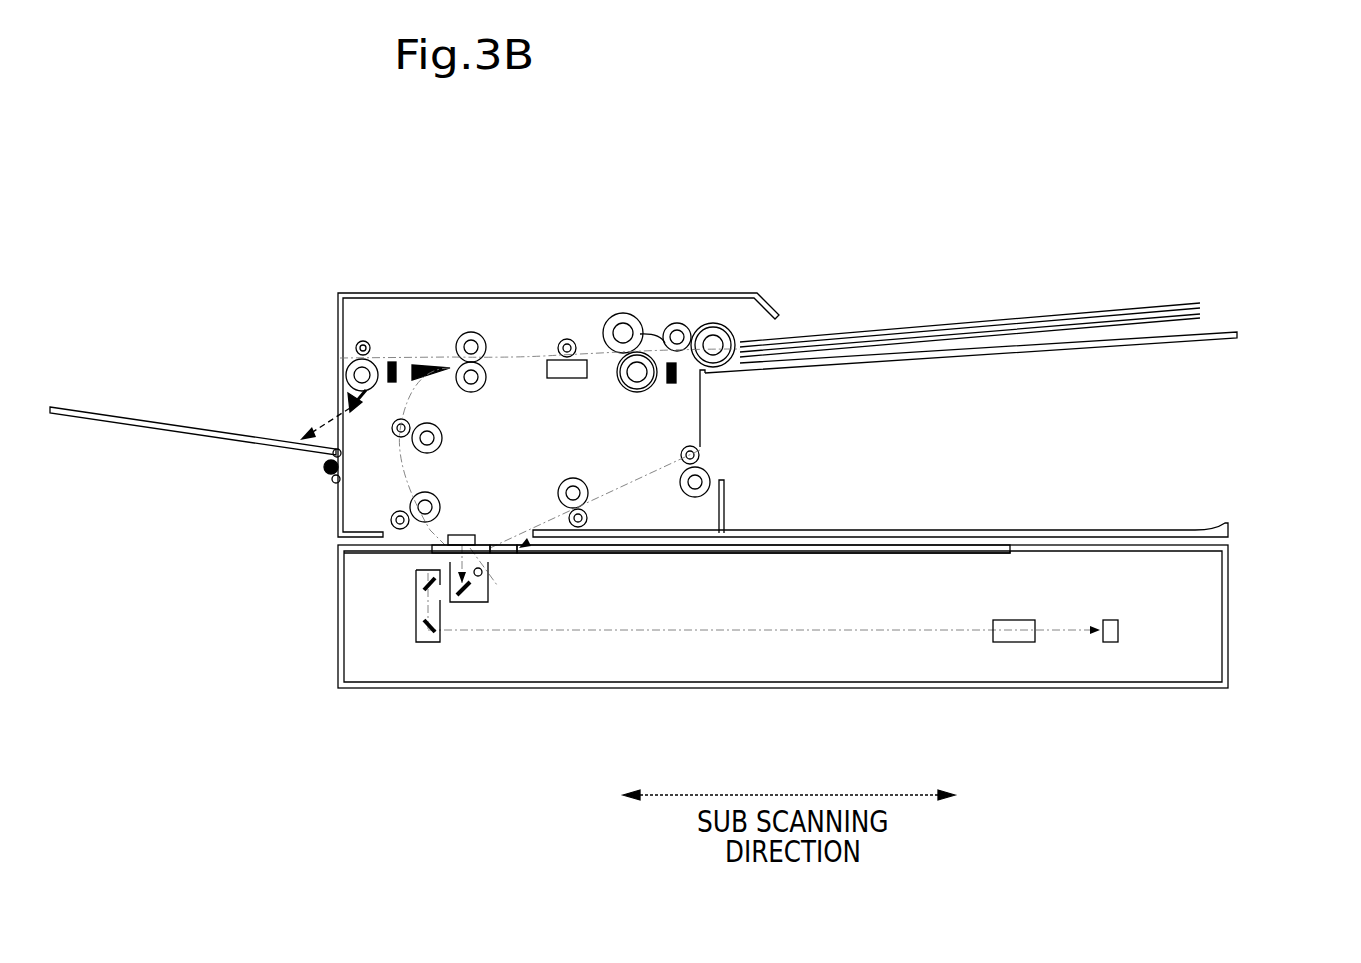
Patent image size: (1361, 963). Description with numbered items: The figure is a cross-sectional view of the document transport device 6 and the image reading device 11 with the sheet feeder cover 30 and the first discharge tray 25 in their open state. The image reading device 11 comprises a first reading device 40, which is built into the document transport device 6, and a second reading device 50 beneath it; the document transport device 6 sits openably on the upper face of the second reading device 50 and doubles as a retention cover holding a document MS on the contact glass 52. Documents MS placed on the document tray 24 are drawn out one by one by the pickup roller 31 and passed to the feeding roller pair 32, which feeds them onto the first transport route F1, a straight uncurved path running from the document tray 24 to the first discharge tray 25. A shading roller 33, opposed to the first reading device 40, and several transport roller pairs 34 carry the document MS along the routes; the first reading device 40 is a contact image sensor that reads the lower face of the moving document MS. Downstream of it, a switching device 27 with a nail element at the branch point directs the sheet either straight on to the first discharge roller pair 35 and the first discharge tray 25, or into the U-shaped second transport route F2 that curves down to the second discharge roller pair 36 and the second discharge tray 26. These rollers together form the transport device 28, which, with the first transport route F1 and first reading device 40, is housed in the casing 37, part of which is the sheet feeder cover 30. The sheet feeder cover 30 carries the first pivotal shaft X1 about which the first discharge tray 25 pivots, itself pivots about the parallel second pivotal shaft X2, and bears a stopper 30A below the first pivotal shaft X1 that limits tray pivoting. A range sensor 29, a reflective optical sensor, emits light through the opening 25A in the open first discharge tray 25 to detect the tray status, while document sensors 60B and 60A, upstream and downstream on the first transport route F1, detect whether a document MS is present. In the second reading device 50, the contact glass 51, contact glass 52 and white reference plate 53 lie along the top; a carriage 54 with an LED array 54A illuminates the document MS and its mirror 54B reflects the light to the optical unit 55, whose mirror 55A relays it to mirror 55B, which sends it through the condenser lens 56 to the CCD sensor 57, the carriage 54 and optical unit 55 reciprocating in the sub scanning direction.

The document transport device 6 is at (343, 270).
The image reading device 11 is at (1268, 620).
The document tray 24 is at (1245, 330).
The first discharge tray 25 is at (160, 430).
The opening 25A is at (300, 438).
The second discharge tray 26 is at (1130, 530).
The switching device 27 is at (440, 366).
The transport device 28 is at (530, 556).
The range sensor 29 is at (350, 398).
The sheet feeder cover 30 is at (590, 293).
The stopper 30A is at (323, 467).
The pickup roller 31 is at (705, 323).
The feeding roller pair 32 is at (620, 313).
The shading roller 33 is at (565, 338).
The transport roller pairs 34 is at (471, 332).
The first discharge roller pair 35 is at (355, 340).
The second discharge roller pair 36 is at (700, 457).
The casing 37 is at (333, 487).
The first reading device 40 is at (567, 379).
The second reading device 50 is at (1195, 688).
The contact glass 51 is at (480, 533).
The contact glass 52 is at (770, 555).
The white reference plate 53 is at (500, 556).
The carriage 54 is at (466, 608).
The LED array 54A is at (480, 578).
The mirror 54B is at (455, 590).
The optical unit 55 is at (425, 650).
The mirror 55A is at (420, 585).
The mirror 55B is at (425, 625).
The condenser lens 56 is at (1010, 642).
The CCD sensor 57 is at (1110, 642).
The document sensor 60A is at (672, 384).
The document sensor 60B is at (392, 360).
The first transport route F1 is at (510, 358).
The second transport route F2 is at (648, 482).
The document MS is at (830, 340).
The first pivotal shaft X1 is at (342, 453).
The second pivotal shaft X2 is at (342, 481).